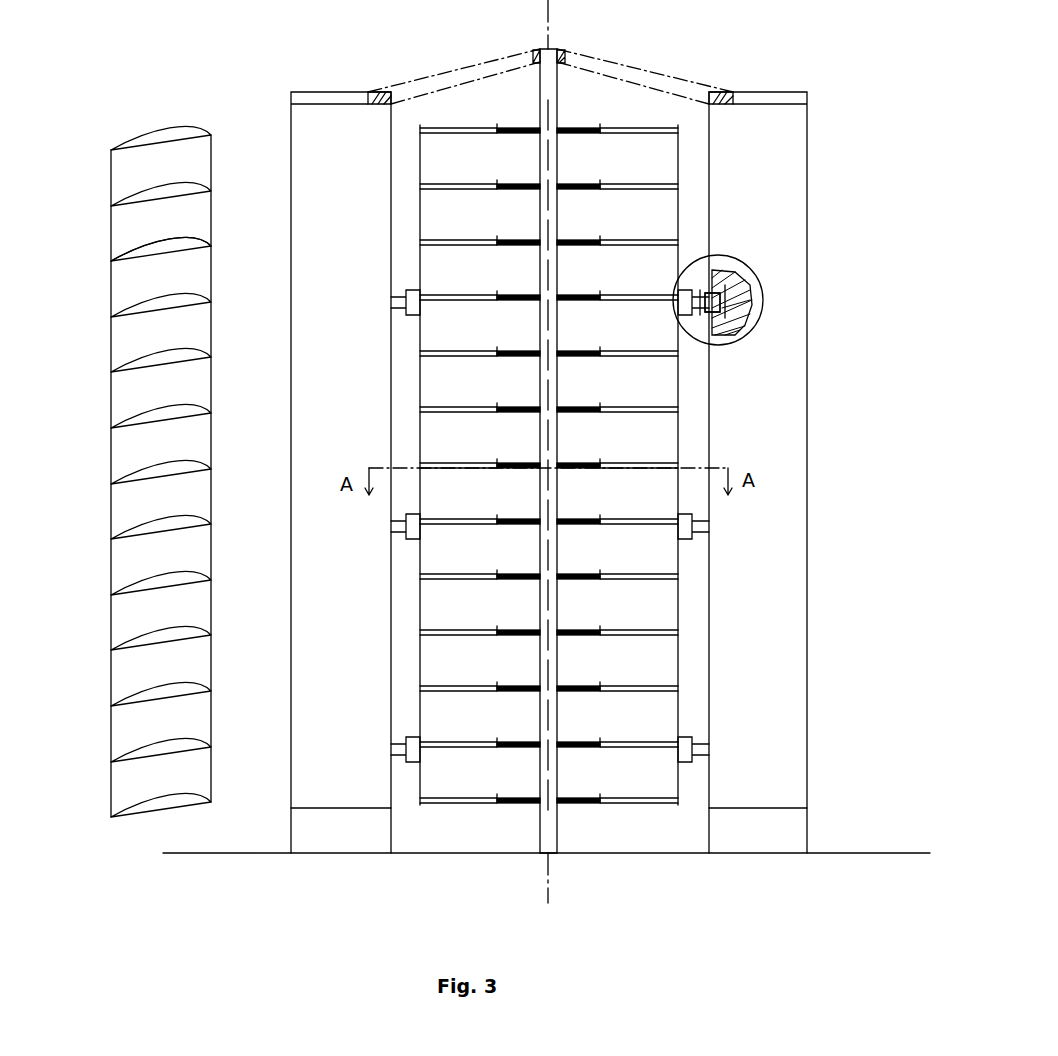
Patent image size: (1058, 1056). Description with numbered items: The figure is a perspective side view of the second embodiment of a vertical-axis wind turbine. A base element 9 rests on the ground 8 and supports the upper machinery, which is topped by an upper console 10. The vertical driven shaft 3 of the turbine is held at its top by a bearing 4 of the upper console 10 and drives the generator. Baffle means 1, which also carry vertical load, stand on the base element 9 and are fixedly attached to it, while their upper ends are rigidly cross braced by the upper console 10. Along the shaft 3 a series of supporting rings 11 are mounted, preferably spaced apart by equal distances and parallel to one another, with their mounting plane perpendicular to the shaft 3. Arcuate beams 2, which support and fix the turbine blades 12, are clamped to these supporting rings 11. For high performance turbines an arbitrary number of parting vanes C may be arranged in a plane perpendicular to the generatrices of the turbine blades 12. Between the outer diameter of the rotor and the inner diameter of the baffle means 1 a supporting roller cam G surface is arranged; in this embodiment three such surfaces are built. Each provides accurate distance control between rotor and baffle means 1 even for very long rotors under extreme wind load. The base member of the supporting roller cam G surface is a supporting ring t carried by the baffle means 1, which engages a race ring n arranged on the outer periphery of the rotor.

The baffle means 1 is at (798, 133).
The arcuate beams 2 is at (648, 628).
The vertical driven shaft 3 is at (548, 733).
The bearing 4 is at (566, 50).
The ground 8 is at (866, 853).
The base element 9 is at (778, 826).
The upper console 10 is at (658, 78).
The supporting rings 11 is at (590, 575).
The turbine blades 12 is at (113, 170).
The parting vanes C is at (140, 253).
The supporting roller cam surface G is at (757, 270).
The supporting ring t is at (745, 300).
The race ring n is at (702, 520).